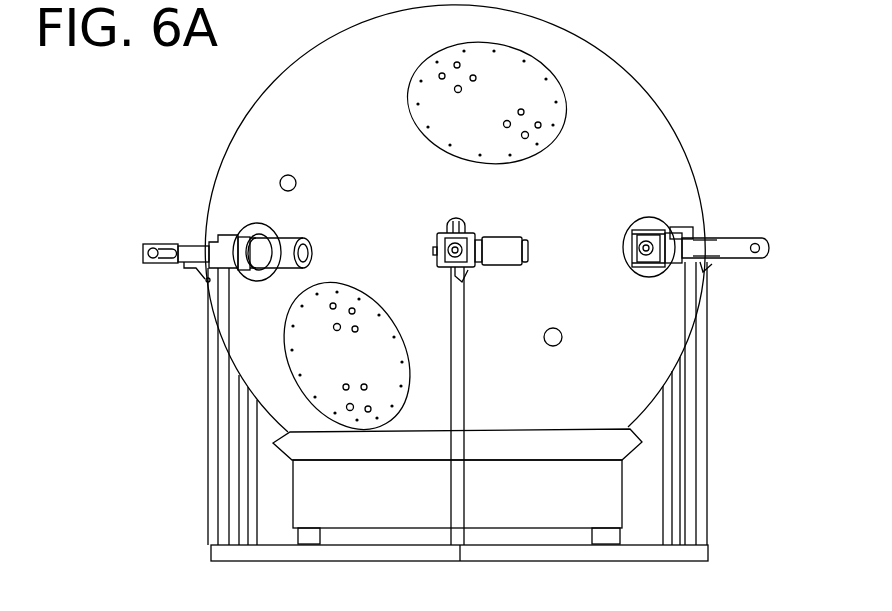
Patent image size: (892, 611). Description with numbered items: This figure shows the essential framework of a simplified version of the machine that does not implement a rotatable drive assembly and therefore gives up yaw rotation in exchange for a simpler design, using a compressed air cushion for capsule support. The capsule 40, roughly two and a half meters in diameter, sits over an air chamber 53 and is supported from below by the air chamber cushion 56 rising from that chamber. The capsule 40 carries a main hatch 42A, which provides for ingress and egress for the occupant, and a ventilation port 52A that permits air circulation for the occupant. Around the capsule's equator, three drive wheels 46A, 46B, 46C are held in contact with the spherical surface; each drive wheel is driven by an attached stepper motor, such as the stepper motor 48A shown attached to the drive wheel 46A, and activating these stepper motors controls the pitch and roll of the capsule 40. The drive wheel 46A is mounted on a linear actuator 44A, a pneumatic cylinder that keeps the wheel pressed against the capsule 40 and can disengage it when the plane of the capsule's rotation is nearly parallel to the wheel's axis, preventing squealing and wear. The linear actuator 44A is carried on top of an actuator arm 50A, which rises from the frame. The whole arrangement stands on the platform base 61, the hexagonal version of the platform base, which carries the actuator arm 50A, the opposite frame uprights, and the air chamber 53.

The capsule 40 is at (346, 86).
The main hatch 42A is at (557, 138).
The linear actuator 44A is at (185, 244).
The drive wheel 46A is at (250, 222).
The drive wheel 46B is at (457, 216).
The drive wheel 46C is at (655, 225).
The stepper motor 48A is at (293, 232).
The actuator arm 50A is at (206, 357).
The ventilation port 52A is at (290, 174).
The air chamber 53 is at (378, 517).
The air chamber cushion 56 is at (550, 428).
The platform base- hexagonal version 61 is at (709, 549).